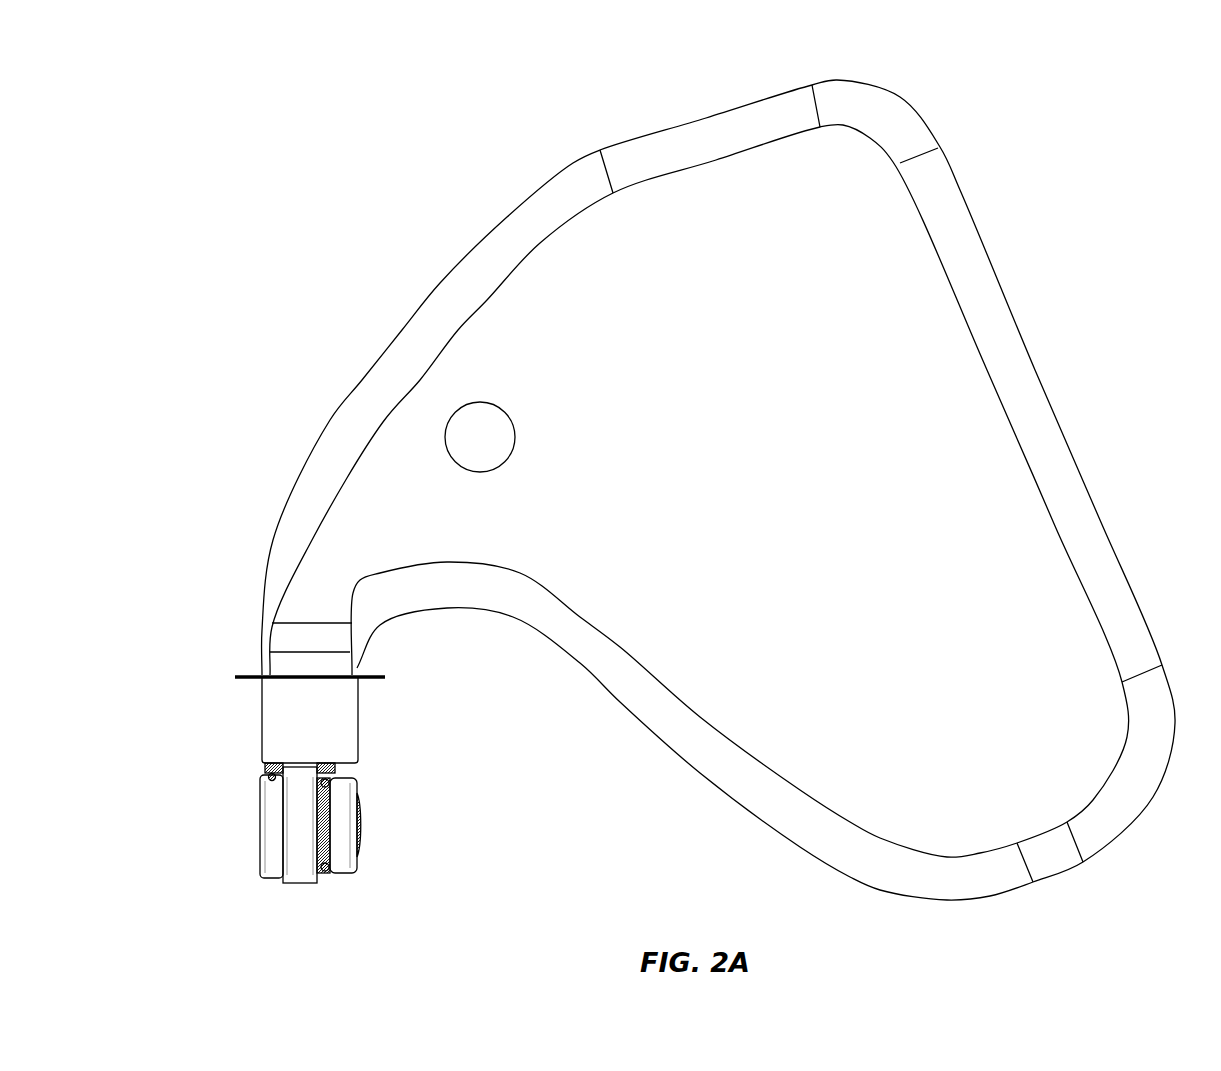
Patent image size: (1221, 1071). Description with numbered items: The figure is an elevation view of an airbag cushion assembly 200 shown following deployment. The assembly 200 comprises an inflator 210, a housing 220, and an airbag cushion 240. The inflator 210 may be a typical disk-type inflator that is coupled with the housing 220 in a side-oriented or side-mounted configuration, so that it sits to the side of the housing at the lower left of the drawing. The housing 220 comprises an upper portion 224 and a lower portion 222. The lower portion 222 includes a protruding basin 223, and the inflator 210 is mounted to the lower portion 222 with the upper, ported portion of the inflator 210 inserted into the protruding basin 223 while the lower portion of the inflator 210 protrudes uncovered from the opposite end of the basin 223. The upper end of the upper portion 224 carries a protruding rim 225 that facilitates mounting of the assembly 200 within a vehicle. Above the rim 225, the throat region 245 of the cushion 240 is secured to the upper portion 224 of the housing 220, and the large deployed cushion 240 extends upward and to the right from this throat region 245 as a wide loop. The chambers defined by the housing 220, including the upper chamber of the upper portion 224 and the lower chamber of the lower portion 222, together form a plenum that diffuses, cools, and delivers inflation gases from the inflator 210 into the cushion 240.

The airbag cushion assembly 200 is at (1088, 97).
The airbag cushion 240 is at (1048, 448).
The housing 220 is at (256, 742).
The throat region 245 is at (263, 650).
The protruding rim 225 is at (381, 676).
The upper portion 224 is at (345, 724).
The protruding basin 223 is at (270, 840).
The lower portion 222 is at (300, 868).
The inflator 210 is at (340, 828).